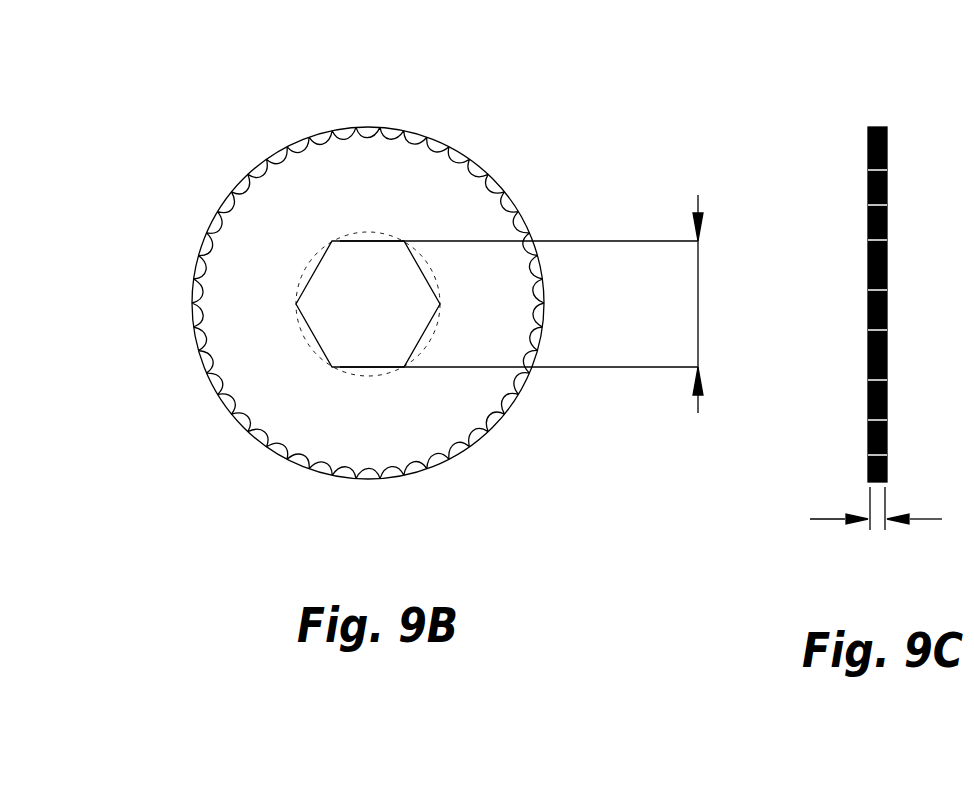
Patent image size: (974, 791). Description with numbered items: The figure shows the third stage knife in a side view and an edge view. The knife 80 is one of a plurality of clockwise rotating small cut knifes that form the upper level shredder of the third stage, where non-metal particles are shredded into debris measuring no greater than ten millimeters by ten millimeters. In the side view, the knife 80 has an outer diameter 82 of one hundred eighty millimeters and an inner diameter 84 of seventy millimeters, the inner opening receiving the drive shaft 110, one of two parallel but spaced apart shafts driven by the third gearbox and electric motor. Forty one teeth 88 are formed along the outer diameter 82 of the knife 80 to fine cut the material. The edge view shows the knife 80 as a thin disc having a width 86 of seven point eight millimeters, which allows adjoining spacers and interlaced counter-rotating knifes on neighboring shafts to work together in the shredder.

In FIG. 9B, the small cut knife 80 is at (528, 187).
In FIG. 9C, the small cut knife 80 is at (913, 218).
In FIG. 9B, the outer diameter 82 is at (228, 182).
In FIG. 9B, the inner diameter 84 is at (700, 300).
In FIG. 9C, the width 86 is at (810, 519).
In FIG. 9B, the teeth 88 is at (357, 127).
In FIG. 9C, the teeth 88 is at (888, 135).
In FIG. 9B, the drive shaft 110 is at (347, 347).